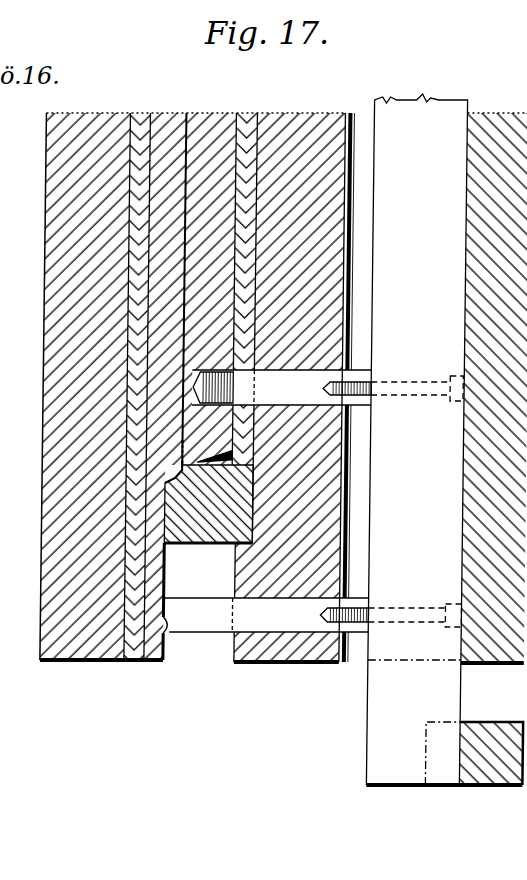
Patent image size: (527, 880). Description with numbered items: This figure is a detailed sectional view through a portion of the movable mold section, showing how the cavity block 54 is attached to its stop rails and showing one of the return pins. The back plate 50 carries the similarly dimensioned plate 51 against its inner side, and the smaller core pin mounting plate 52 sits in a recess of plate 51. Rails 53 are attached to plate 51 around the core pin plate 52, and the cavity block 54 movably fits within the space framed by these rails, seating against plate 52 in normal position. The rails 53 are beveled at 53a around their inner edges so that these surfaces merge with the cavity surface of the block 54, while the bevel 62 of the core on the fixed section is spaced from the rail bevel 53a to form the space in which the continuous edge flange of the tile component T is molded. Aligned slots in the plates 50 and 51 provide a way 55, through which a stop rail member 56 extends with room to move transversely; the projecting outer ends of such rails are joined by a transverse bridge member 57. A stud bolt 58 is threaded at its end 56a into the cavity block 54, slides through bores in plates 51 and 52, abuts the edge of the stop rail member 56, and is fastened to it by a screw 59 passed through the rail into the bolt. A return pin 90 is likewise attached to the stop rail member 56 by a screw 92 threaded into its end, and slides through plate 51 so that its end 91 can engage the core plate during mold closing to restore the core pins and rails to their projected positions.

The back plate 50 is at (500, 124).
The plate 51 is at (300, 126).
The core pin mounting plate 52 is at (246, 124).
The rails 53 is at (184, 539).
The bevel 53a is at (178, 474).
The cavity block 54 is at (213, 124).
The way 55 is at (357, 124).
The stop rail member 56 is at (383, 753).
The end of stud bolt 56a is at (218, 380).
The transverse bridge member 57 is at (493, 736).
The stud bolt 58 is at (259, 407).
The screw 59 is at (410, 386).
The bevel of core 62 is at (178, 470).
The return pin 90 is at (222, 616).
The end of return pin 91 is at (168, 633).
The screw 92 is at (409, 614).
The tile component T is at (183, 112).